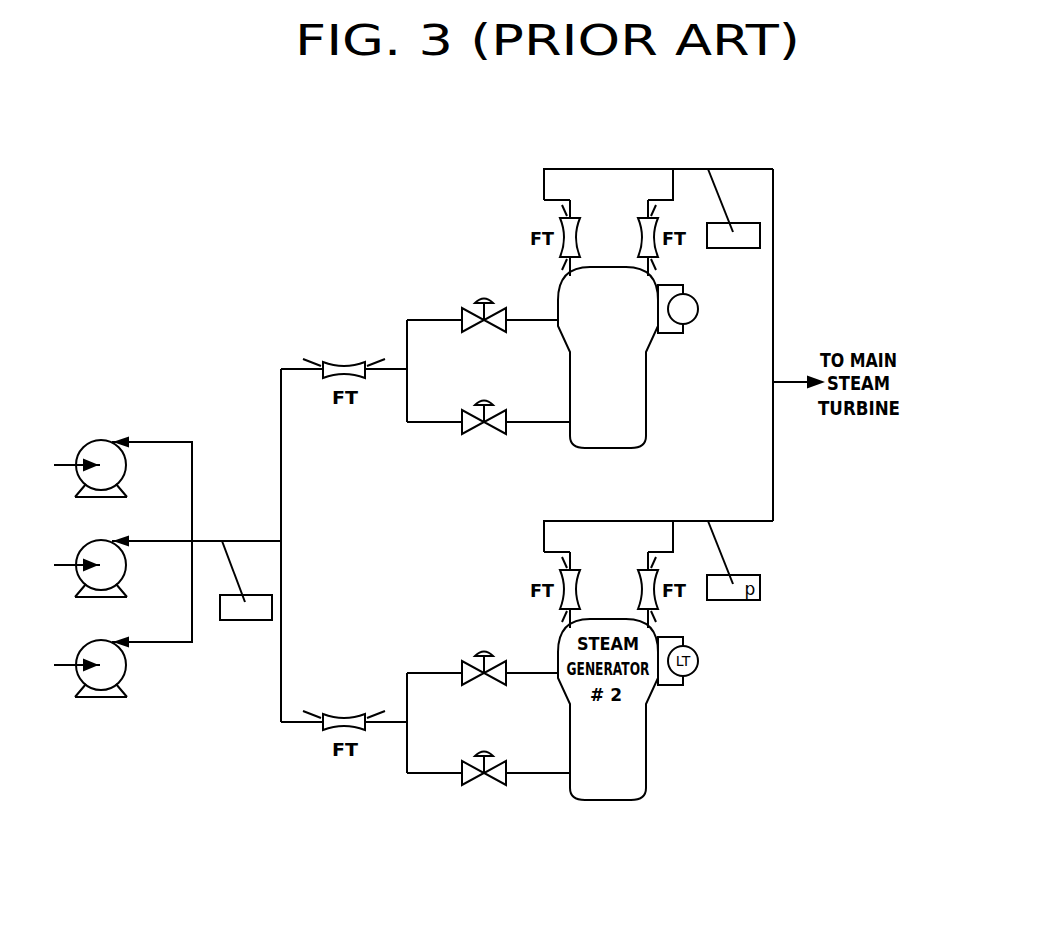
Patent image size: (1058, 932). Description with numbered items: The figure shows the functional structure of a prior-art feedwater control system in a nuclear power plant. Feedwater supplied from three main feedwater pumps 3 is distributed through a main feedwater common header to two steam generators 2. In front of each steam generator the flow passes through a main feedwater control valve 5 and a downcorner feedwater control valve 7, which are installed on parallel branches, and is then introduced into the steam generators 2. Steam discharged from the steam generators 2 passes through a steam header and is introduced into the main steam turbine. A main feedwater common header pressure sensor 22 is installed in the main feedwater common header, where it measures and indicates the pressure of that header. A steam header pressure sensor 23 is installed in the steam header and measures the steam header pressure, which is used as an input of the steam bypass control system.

The main feedwater pumps 3 is at (83, 443).
The main feedwater common header pressure sensor 22 is at (245, 622).
The downcorner feedwater control valves 7 is at (475, 318).
The main feedwater control valves 5 is at (476, 426).
The steam generators 2 is at (647, 415).
The steam header pressure sensor 23 is at (733, 248).